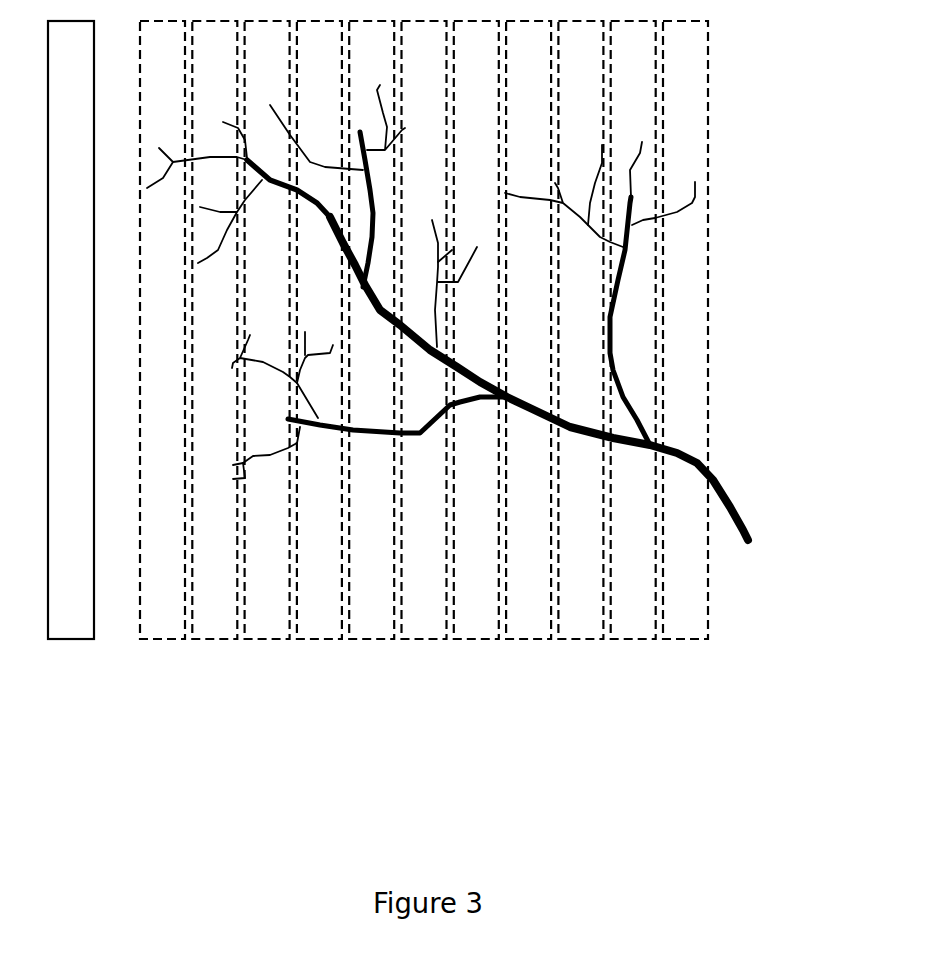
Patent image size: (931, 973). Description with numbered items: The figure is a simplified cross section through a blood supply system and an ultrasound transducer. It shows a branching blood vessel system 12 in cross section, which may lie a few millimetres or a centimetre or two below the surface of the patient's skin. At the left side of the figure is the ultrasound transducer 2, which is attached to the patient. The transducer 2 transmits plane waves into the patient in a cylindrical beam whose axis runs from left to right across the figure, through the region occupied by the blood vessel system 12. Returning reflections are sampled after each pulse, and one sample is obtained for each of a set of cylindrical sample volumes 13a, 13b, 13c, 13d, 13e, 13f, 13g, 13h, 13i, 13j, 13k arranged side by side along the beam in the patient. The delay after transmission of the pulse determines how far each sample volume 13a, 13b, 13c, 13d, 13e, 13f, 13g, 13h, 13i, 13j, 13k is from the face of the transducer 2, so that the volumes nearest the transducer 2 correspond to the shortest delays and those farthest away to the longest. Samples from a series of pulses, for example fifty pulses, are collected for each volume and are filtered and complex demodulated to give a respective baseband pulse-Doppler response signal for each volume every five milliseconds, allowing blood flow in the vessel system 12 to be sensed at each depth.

The ultrasound transducer 2 is at (70, 639).
The blood vessel system 12 is at (732, 483).
The cylindrical sample volume 13a is at (162, 639).
The cylindrical sample volume 13b is at (214, 639).
The cylindrical sample volume 13c is at (265, 639).
The cylindrical sample volume 13d is at (317, 639).
The cylindrical sample volume 13e is at (368, 639).
The cylindrical sample volume 13f is at (420, 639).
The cylindrical sample volume 13g is at (472, 639).
The cylindrical sample volume 13h is at (523, 639).
The cylindrical sample volume 13i is at (575, 639).
The cylindrical sample volume 13j is at (626, 639).
The cylindrical sample volume 13k is at (678, 639).